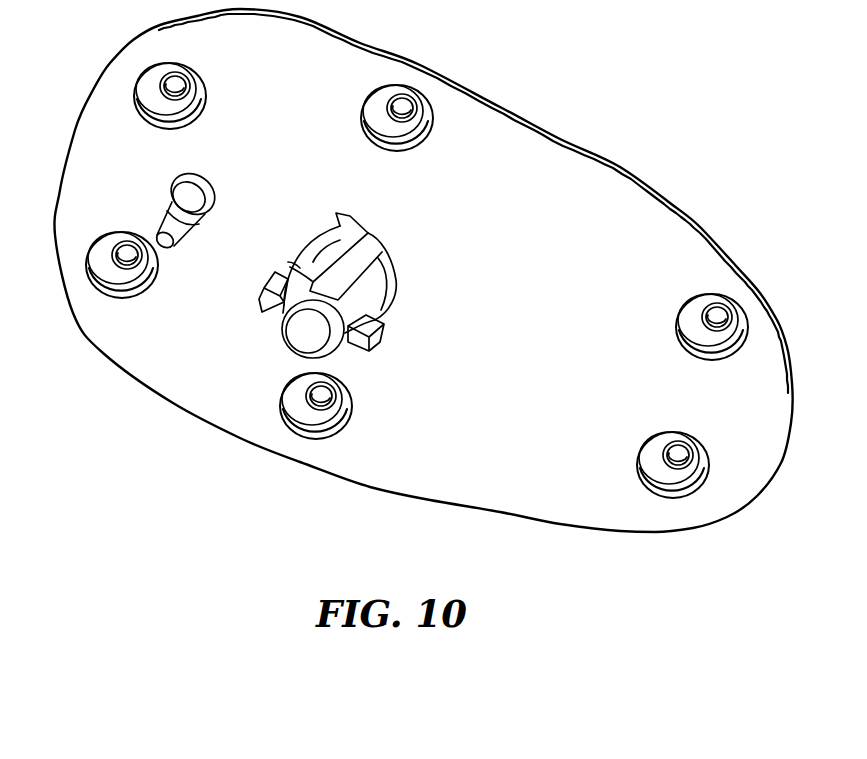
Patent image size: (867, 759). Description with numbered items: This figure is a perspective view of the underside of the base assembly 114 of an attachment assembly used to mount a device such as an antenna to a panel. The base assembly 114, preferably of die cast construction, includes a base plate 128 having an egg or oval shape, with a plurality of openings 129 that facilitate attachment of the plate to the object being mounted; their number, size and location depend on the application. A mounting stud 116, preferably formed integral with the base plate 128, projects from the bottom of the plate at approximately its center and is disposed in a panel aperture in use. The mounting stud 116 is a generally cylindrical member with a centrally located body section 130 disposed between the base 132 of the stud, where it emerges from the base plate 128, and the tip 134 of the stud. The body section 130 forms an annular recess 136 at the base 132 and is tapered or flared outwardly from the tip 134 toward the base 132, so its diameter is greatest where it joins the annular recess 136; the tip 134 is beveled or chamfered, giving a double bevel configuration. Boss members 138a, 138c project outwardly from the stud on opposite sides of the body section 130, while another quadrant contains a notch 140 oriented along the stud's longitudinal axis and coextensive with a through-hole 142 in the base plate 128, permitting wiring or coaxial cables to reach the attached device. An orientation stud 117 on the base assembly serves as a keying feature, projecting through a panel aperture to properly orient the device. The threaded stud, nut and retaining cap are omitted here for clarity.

The base assembly 114 is at (600, 222).
The mounting stud 116 is at (292, 268).
The orientation stud 117 is at (180, 202).
The base plate 128 is at (557, 482).
The openings 129 is at (163, 96).
The body section 130 is at (344, 234).
The base of the stud 132 is at (386, 246).
The tip of the stud 134 is at (347, 353).
The annular recess 136 is at (327, 232).
The boss member 138a is at (268, 282).
The boss member 138c is at (384, 339).
The notch 140 is at (343, 214).
The through-hole 142 is at (368, 232).